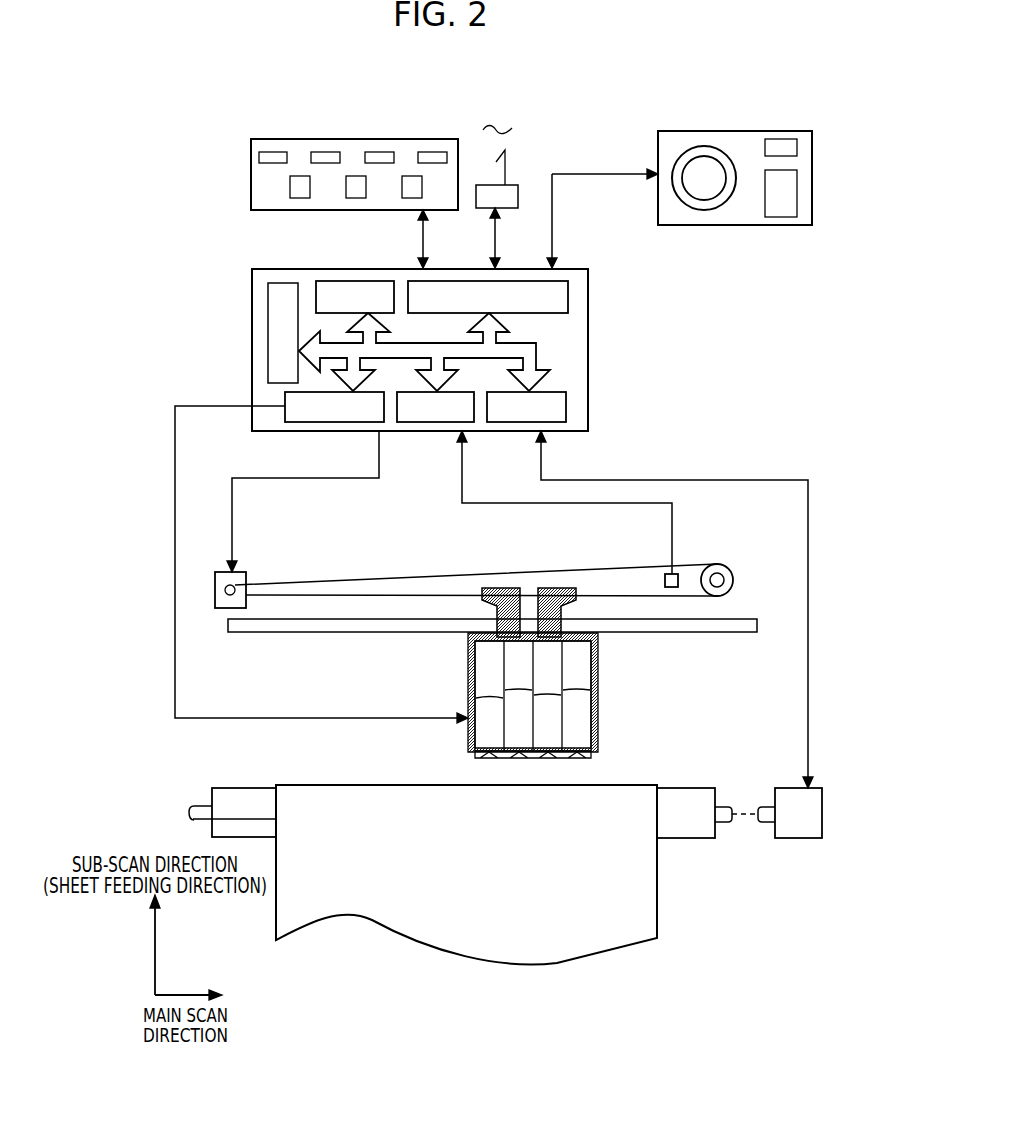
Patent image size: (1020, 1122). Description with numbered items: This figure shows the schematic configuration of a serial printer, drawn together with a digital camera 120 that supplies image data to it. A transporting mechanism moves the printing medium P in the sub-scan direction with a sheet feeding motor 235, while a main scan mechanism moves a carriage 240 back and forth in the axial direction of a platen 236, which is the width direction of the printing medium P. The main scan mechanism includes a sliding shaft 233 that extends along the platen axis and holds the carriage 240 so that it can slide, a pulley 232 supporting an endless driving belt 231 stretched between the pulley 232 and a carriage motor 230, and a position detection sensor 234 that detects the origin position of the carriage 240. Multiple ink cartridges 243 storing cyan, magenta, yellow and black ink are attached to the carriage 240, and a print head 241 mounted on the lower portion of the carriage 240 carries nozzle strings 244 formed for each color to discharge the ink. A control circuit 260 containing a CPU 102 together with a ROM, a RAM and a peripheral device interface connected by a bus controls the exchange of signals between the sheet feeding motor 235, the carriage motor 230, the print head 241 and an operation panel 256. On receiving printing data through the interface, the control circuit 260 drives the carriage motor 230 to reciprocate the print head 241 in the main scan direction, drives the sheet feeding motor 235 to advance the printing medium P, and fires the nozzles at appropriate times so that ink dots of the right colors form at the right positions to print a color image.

The operation panel 256 is at (397, 139).
The digital camera 120 is at (727, 131).
The CPU 102 is at (325, 281).
The control circuit 260 is at (461, 330).
The carriage motor 230 is at (222, 610).
The endless driving belt 231 is at (302, 582).
The pulley 232 is at (704, 568).
The sliding shaft 233 is at (284, 632).
The position detection sensor 234 is at (665, 578).
The carriage 240 is at (632, 698).
The print head 241 is at (588, 757).
The ink cartridges 243 is at (598, 684).
The nozzle strings 244 is at (482, 767).
The sheet feeding motor 235 is at (797, 838).
The platen 236 is at (685, 838).
The printing medium P is at (657, 920).